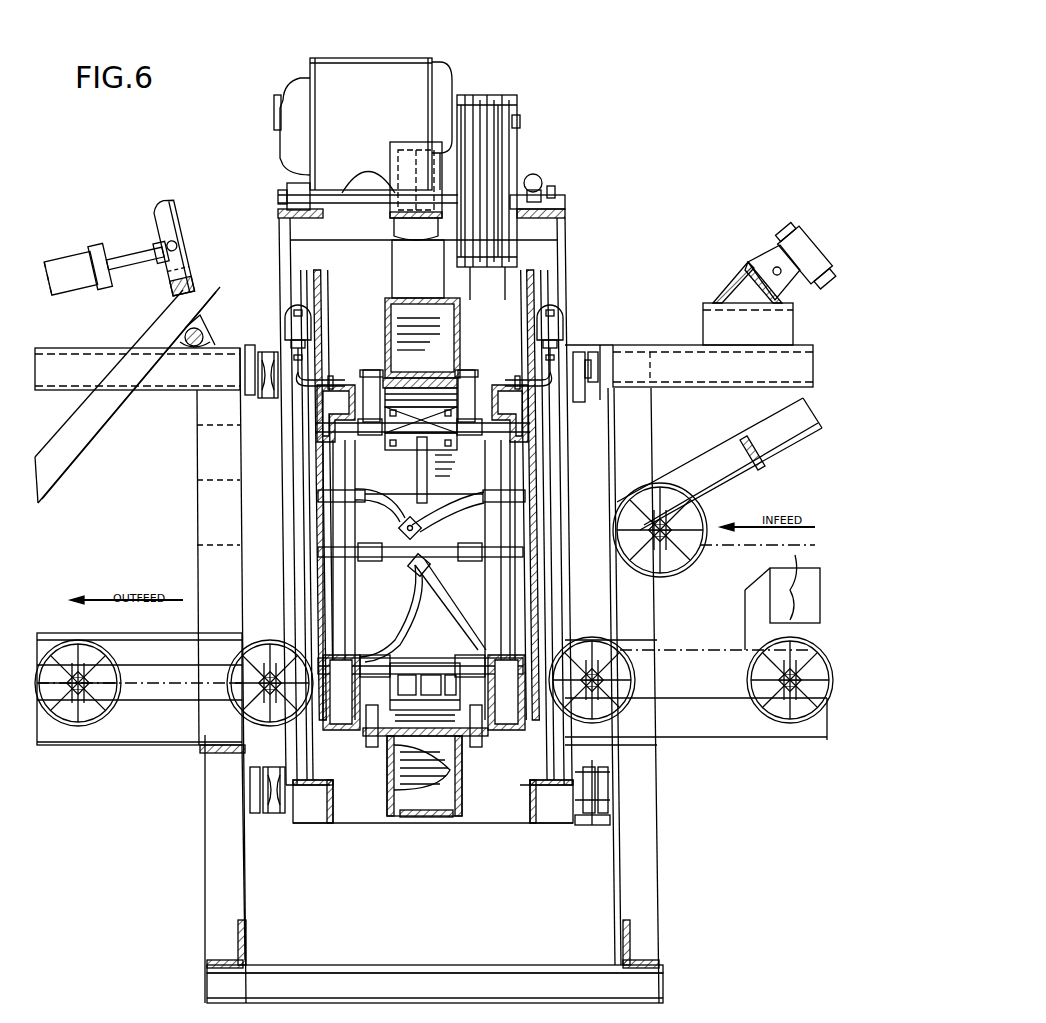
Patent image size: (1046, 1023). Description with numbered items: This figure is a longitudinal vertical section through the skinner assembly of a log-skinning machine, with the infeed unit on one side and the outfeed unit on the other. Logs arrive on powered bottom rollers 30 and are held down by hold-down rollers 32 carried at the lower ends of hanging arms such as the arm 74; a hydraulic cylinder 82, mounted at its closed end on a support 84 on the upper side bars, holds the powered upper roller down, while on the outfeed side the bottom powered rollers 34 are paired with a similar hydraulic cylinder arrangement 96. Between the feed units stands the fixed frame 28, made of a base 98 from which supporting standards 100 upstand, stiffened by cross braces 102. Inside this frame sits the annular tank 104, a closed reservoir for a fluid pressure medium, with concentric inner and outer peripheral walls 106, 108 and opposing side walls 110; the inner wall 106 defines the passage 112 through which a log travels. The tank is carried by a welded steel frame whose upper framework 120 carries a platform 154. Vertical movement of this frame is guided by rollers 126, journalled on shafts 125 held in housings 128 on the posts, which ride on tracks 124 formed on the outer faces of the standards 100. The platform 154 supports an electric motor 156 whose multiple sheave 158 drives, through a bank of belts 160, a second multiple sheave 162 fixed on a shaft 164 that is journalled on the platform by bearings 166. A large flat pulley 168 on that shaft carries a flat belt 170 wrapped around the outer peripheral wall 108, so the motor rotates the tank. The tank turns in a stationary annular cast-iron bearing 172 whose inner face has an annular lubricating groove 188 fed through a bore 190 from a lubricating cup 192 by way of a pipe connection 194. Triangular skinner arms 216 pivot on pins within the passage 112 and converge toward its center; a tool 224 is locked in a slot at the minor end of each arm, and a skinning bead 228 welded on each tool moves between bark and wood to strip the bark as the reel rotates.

The fixed frame 28 is at (661, 929).
The powered bottom rollers 30 is at (790, 715).
The hold-down rollers 32 is at (698, 515).
The bottom powered rollers 34 is at (80, 722).
The arm 74 is at (75, 458).
The hydraulic cylinder 82 is at (798, 240).
The support 84 is at (722, 290).
The hydraulic cylinder arrangement 96 is at (68, 270).
The base 98 is at (395, 968).
The supporting standards 100 is at (205, 892).
The cross braces 102 is at (240, 765).
The annular tank 104 is at (455, 800).
The inner peripheral wall 106 is at (393, 762).
The outer peripheral wall 108 is at (405, 815).
The side walls 110 is at (460, 788).
The passage 112 is at (450, 740).
The upper framework 120 is at (568, 228).
The tracks 124 is at (605, 825).
The shafts 125 is at (610, 800).
The rollers 126 is at (258, 400).
The housings 128 is at (610, 772).
The platform 154 is at (568, 212).
The electric motor 156 is at (385, 82).
The multiple sheave 158 is at (508, 103).
The belts 160 is at (497, 157).
The multiple sheave 162 is at (535, 265).
The shaft 164 is at (537, 180).
The bearings 166 is at (562, 205).
The flat pulley 168 is at (385, 245).
The flat belt 170 is at (430, 290).
The bearing 172 is at (495, 395).
The lubricating groove 188 is at (479, 438).
The bore 190 is at (530, 405).
The lubricating cup 192 is at (553, 320).
The pipe connection 194 is at (560, 348).
The skinner arms 216 is at (460, 645).
The tool 224 is at (395, 515).
The skinning bead 228 is at (425, 532).